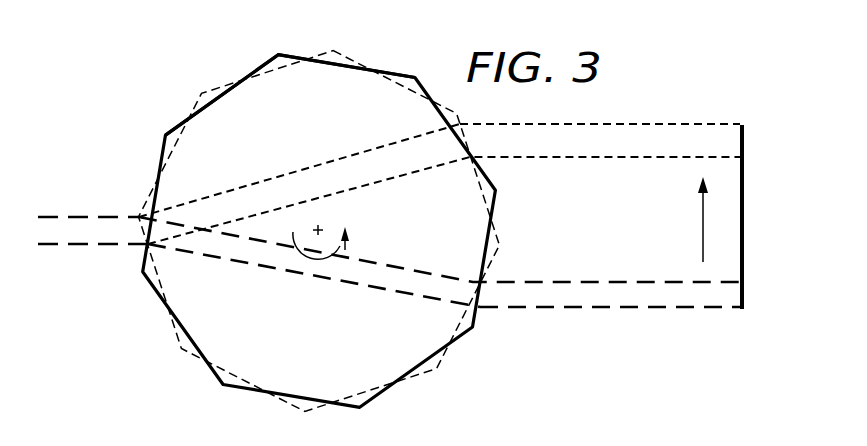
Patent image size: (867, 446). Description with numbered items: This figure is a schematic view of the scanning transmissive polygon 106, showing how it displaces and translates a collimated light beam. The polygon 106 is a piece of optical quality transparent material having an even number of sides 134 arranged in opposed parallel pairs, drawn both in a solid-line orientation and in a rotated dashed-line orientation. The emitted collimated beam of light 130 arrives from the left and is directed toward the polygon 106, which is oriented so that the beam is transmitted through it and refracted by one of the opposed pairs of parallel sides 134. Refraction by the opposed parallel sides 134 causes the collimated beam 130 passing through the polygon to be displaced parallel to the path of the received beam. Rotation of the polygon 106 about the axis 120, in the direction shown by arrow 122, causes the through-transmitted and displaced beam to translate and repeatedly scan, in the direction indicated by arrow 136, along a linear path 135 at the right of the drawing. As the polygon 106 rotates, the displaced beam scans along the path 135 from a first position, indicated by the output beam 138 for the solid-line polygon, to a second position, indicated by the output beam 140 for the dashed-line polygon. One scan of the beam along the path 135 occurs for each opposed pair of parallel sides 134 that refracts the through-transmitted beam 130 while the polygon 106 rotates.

The scanning transmissive polygon 106 is at (187, 360).
The sides 134 is at (401, 73).
The collimated beam of light 130 is at (110, 247).
The output beam 140 is at (652, 124).
The output beam 138 is at (613, 308).
The linear path 135 is at (745, 243).
The arrow 136 is at (703, 232).
The axis 120 is at (322, 228).
The arrow 122 is at (350, 244).